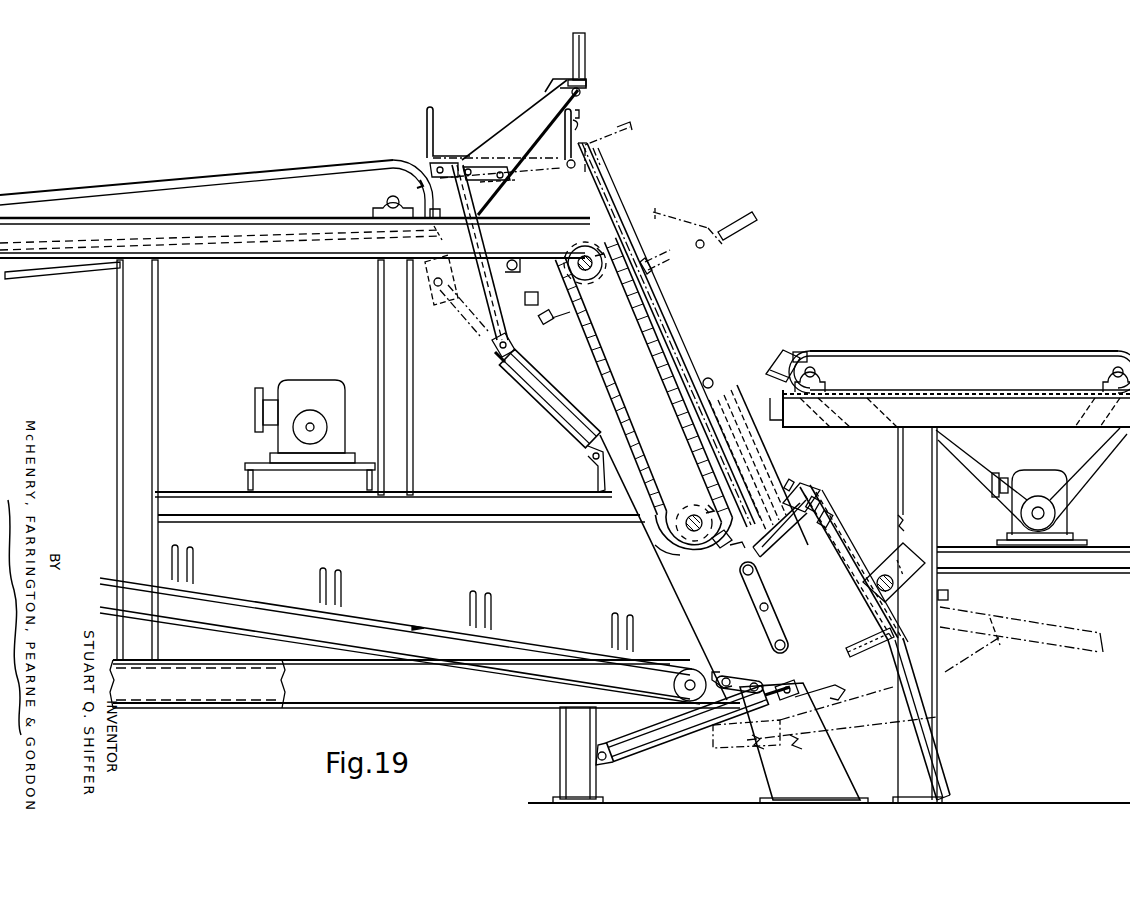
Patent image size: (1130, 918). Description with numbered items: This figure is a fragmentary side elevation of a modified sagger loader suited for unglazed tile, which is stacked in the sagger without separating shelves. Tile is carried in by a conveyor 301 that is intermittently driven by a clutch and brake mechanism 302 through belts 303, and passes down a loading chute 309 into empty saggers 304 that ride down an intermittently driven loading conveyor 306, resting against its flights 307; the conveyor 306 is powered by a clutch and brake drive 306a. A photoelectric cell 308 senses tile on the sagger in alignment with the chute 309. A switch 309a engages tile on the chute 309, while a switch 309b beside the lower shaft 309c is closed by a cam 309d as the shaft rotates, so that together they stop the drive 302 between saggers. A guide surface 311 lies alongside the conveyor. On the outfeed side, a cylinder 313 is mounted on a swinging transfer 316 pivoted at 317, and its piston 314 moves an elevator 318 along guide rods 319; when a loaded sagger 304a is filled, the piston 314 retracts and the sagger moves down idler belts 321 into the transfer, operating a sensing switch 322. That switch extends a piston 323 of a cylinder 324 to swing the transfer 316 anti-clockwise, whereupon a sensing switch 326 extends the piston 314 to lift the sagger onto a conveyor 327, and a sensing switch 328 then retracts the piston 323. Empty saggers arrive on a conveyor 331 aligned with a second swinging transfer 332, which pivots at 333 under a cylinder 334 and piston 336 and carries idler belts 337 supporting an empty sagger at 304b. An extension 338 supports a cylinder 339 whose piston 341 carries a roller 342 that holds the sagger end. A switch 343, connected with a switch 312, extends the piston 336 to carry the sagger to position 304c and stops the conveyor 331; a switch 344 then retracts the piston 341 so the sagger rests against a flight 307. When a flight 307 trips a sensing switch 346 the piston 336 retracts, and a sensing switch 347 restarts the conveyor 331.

The conveyor 301 is at (965, 350).
The clutch and brake mechanism 302 is at (1058, 520).
The belts 303 is at (1052, 456).
The empty saggers 304 is at (652, 298).
The loaded sagger 304a is at (762, 402).
The empty sagger position 304b is at (436, 132).
The sagger position 304c is at (612, 197).
The loading conveyor 306 is at (606, 376).
The clutch and brake drive 306a is at (305, 383).
The flights 307 is at (548, 325).
The photoelectric cell 308 is at (709, 378).
The loading chute 309 is at (781, 348).
The switch 309a is at (802, 352).
The switch 309b is at (718, 550).
The lower shaft 309c is at (692, 512).
The cam 309d is at (662, 548).
The transfer plate 311 is at (770, 462).
The switch 312 is at (506, 350).
The cylinder 313 is at (1065, 645).
The piston 314 is at (832, 527).
The swinging transfer 316 is at (838, 696).
The pivot 317 is at (926, 563).
The elevator 318 is at (782, 548).
The guide rods 319 is at (825, 578).
The idler belts 321 is at (748, 596).
The sensing switch 322 is at (836, 664).
The piston 323 is at (793, 698).
The cylinder 324 is at (664, 748).
The sensing switch 326 is at (949, 595).
The conveyor 327 is at (527, 670).
The sensing switch 328 is at (822, 494).
The conveyor 331 is at (278, 170).
The swinging transfer 332 is at (483, 332).
The pivot 333 is at (512, 258).
The cylinder 334 is at (562, 420).
The piston 336 is at (496, 366).
The idler belts 337 is at (516, 183).
The extension 338 is at (520, 108).
The cylinder 339 is at (587, 50).
The piston 341 is at (589, 82).
The roller 342 is at (581, 94).
The switch 343 is at (590, 160).
The switch 344 is at (425, 264).
The sensing switch 346 is at (516, 270).
The sensing switch 347 is at (431, 224).